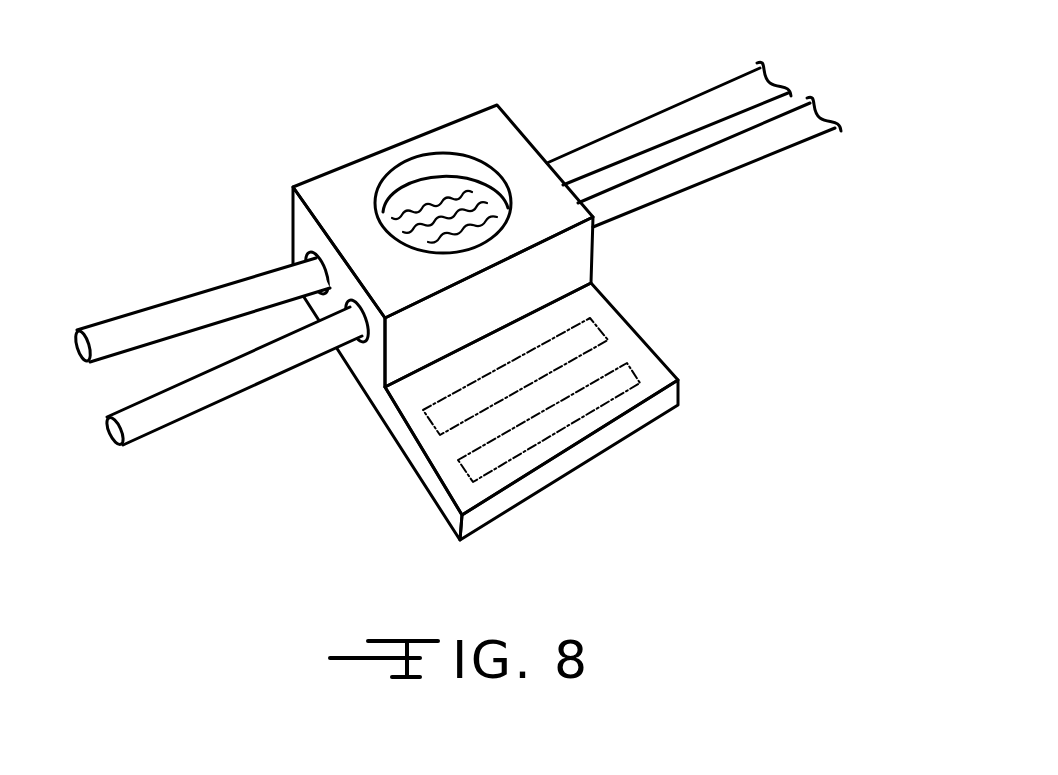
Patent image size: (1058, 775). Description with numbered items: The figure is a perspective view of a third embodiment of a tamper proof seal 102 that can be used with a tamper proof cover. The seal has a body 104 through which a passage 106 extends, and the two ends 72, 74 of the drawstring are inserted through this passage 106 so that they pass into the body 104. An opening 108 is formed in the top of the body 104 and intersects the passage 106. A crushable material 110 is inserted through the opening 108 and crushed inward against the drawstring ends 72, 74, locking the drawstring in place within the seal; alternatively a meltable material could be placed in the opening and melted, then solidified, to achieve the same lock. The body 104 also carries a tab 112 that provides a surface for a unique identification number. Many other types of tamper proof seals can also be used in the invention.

The end of the drawstring 72 is at (140, 328).
The end of the drawstring 74 is at (158, 407).
The tamper proof seal 102 is at (331, 150).
The body 104 is at (492, 142).
The passage 106 is at (328, 293).
The opening 108 is at (482, 177).
The crushable material 110 is at (436, 212).
The tab 112 is at (628, 355).